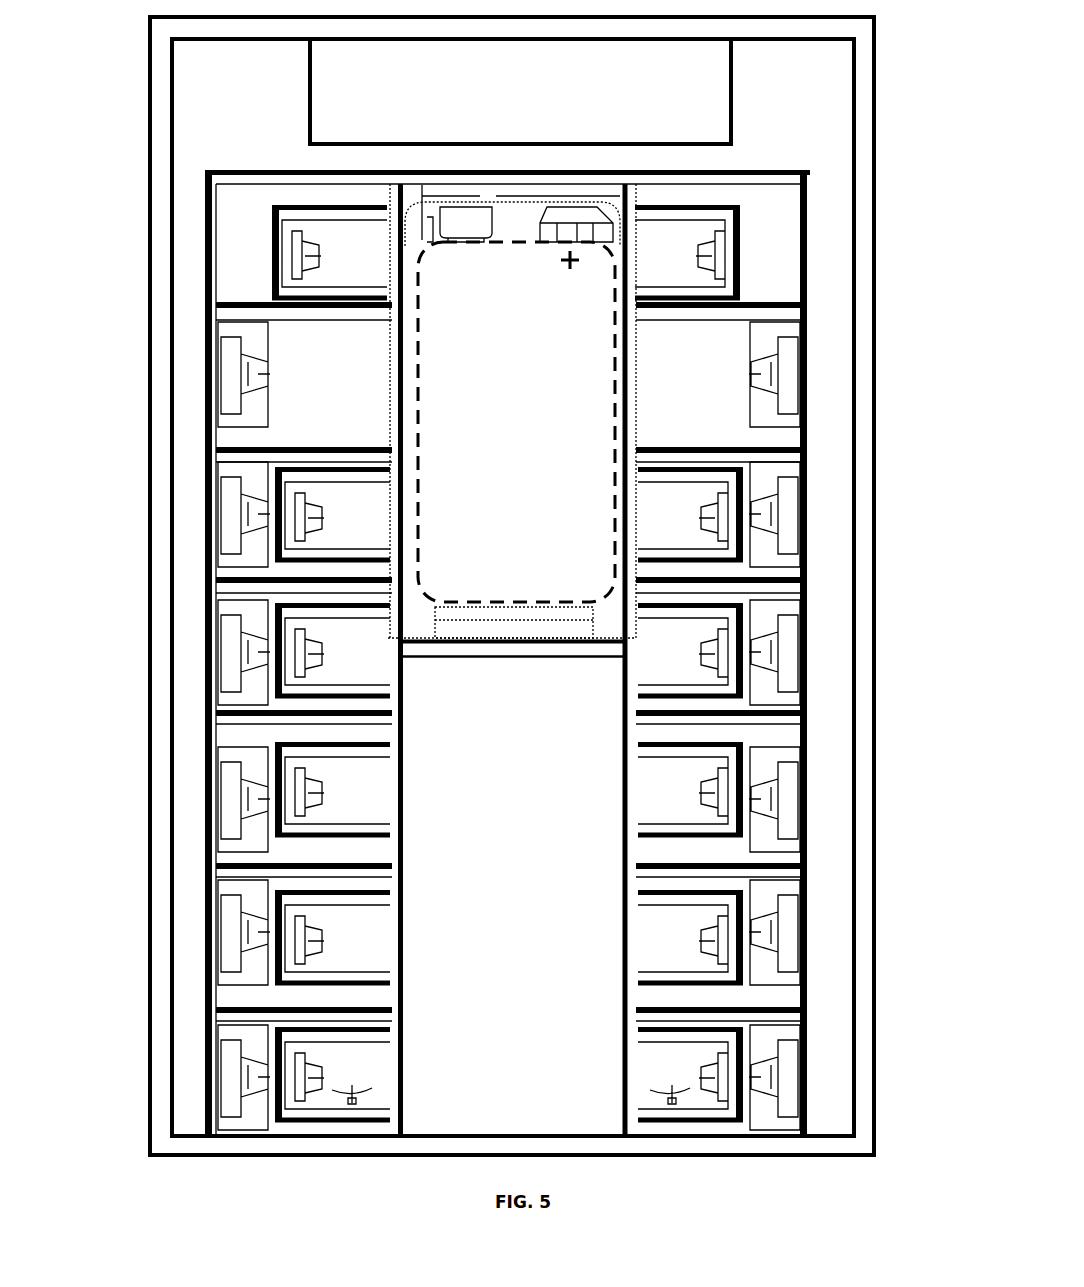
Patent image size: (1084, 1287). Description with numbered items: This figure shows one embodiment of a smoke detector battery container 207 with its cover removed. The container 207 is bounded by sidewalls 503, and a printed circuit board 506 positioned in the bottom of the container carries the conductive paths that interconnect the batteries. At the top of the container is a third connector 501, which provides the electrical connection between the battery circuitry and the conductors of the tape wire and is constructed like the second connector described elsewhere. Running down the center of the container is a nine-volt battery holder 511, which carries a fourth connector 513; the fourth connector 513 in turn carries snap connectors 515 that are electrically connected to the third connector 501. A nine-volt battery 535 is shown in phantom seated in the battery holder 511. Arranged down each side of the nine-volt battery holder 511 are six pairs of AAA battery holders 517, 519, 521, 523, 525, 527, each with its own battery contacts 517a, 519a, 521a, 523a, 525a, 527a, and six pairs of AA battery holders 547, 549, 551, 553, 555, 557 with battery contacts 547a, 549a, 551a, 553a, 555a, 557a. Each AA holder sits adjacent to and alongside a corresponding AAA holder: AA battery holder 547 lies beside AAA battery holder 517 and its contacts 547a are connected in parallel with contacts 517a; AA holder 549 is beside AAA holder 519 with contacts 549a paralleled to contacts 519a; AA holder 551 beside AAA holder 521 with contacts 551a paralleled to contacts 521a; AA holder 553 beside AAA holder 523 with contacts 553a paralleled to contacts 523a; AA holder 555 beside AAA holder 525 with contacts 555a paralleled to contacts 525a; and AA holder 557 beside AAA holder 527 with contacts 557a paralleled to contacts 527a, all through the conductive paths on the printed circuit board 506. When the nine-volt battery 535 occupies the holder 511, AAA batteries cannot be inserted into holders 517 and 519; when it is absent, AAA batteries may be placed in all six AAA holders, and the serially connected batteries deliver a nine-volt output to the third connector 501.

The smoke detector battery container 207 is at (224, 1158).
The third connector 501 is at (622, 71).
The sidewalls 503 is at (856, 1155).
The printed circuit board 506 is at (770, 145).
The 9-volt battery holder 511 is at (547, 587).
The fourth connector 513 is at (487, 193).
The snap connectors 515 is at (573, 218).
The 9-volt battery 535 is at (425, 265).
The AAA battery holder 517 is at (655, 283).
The battery contacts 517a is at (307, 253).
The AA battery holder 547 is at (673, 355).
The battery contacts 547a is at (245, 390).
The AAA battery holder 519 is at (680, 527).
The battery contacts 519a is at (307, 525).
The AA battery holder 549 is at (695, 565).
The battery contacts 549a is at (263, 527).
The AAA battery holder 521 is at (670, 652).
The battery contacts 521a is at (307, 652).
The AA battery holder 551 is at (680, 712).
The battery contacts 551a is at (255, 658).
The AAA battery holder 523 is at (660, 797).
The battery contacts 523a is at (307, 793).
The AA battery holder 553 is at (680, 857).
The battery contacts 553a is at (255, 797).
The AAA battery holder 525 is at (660, 912).
The battery contacts 525a is at (307, 933).
The AA battery holder 555 is at (685, 988).
The battery contacts 555a is at (250, 937).
The AAA battery holder 527 is at (665, 1067).
The battery contacts 527a is at (307, 1073).
The AA battery holder 557 is at (675, 1130).
The battery contacts 557a is at (250, 1077).